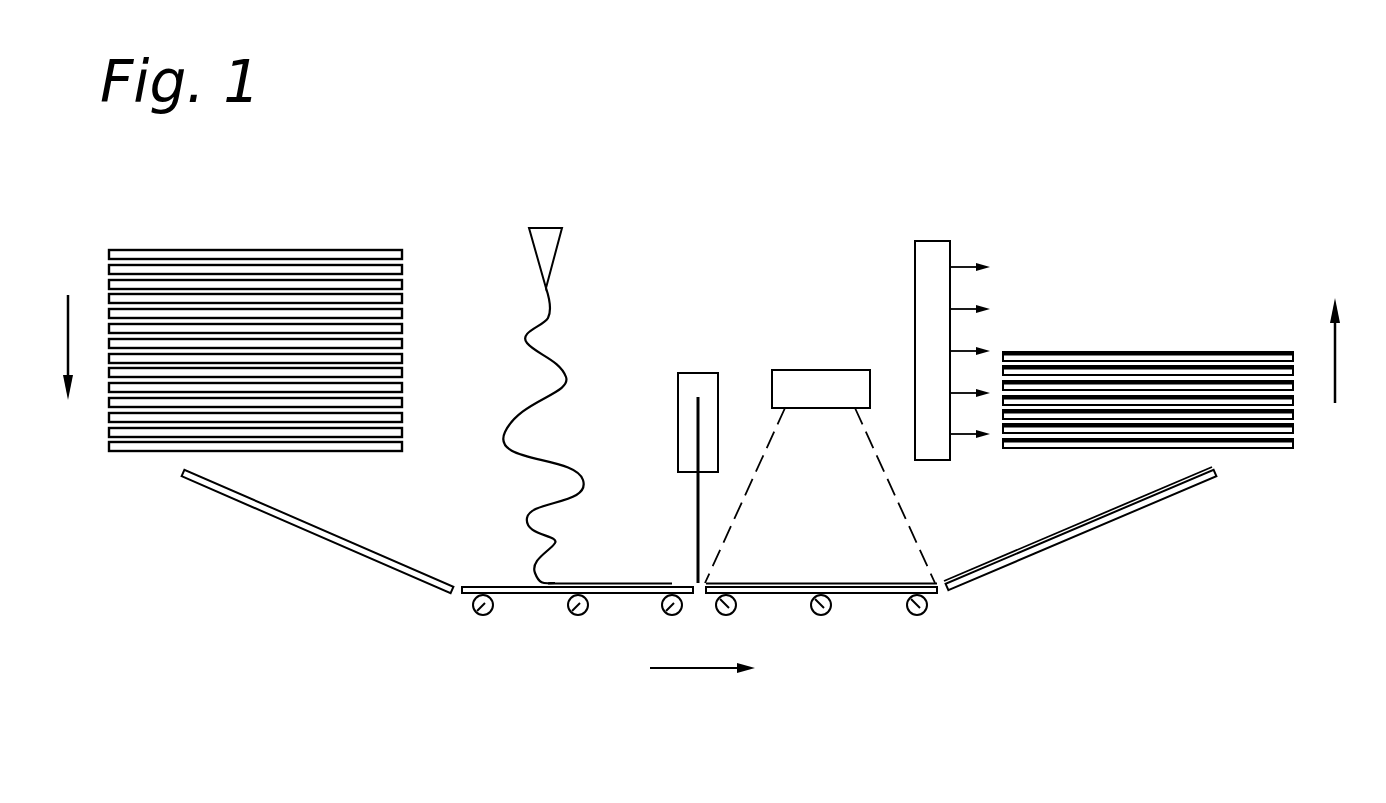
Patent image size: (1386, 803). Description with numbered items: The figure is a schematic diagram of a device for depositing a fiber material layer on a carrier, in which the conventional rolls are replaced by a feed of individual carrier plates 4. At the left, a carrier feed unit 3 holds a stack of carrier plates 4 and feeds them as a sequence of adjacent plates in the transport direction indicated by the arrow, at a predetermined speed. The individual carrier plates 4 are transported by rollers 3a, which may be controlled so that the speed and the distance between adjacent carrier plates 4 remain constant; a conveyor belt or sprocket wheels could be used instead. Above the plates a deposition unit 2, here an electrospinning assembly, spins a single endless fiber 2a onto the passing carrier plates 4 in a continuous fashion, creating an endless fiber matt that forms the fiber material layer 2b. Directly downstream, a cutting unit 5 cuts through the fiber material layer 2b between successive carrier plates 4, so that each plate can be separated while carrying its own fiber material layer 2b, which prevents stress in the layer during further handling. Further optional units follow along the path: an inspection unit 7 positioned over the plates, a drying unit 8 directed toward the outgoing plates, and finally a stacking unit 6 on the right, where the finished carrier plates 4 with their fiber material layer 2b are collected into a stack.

The deposition unit 2 is at (546, 232).
The fiber 2a is at (550, 358).
The fiber material layer 2b is at (670, 583).
The carrier feed unit 3 is at (287, 222).
The rollers 3a is at (665, 613).
The carrier plates 4 is at (125, 445).
The cutting unit 5 is at (698, 382).
The stacking unit 6 is at (1161, 294).
The inspection unit 7 is at (813, 380).
The drying unit 8 is at (932, 250).